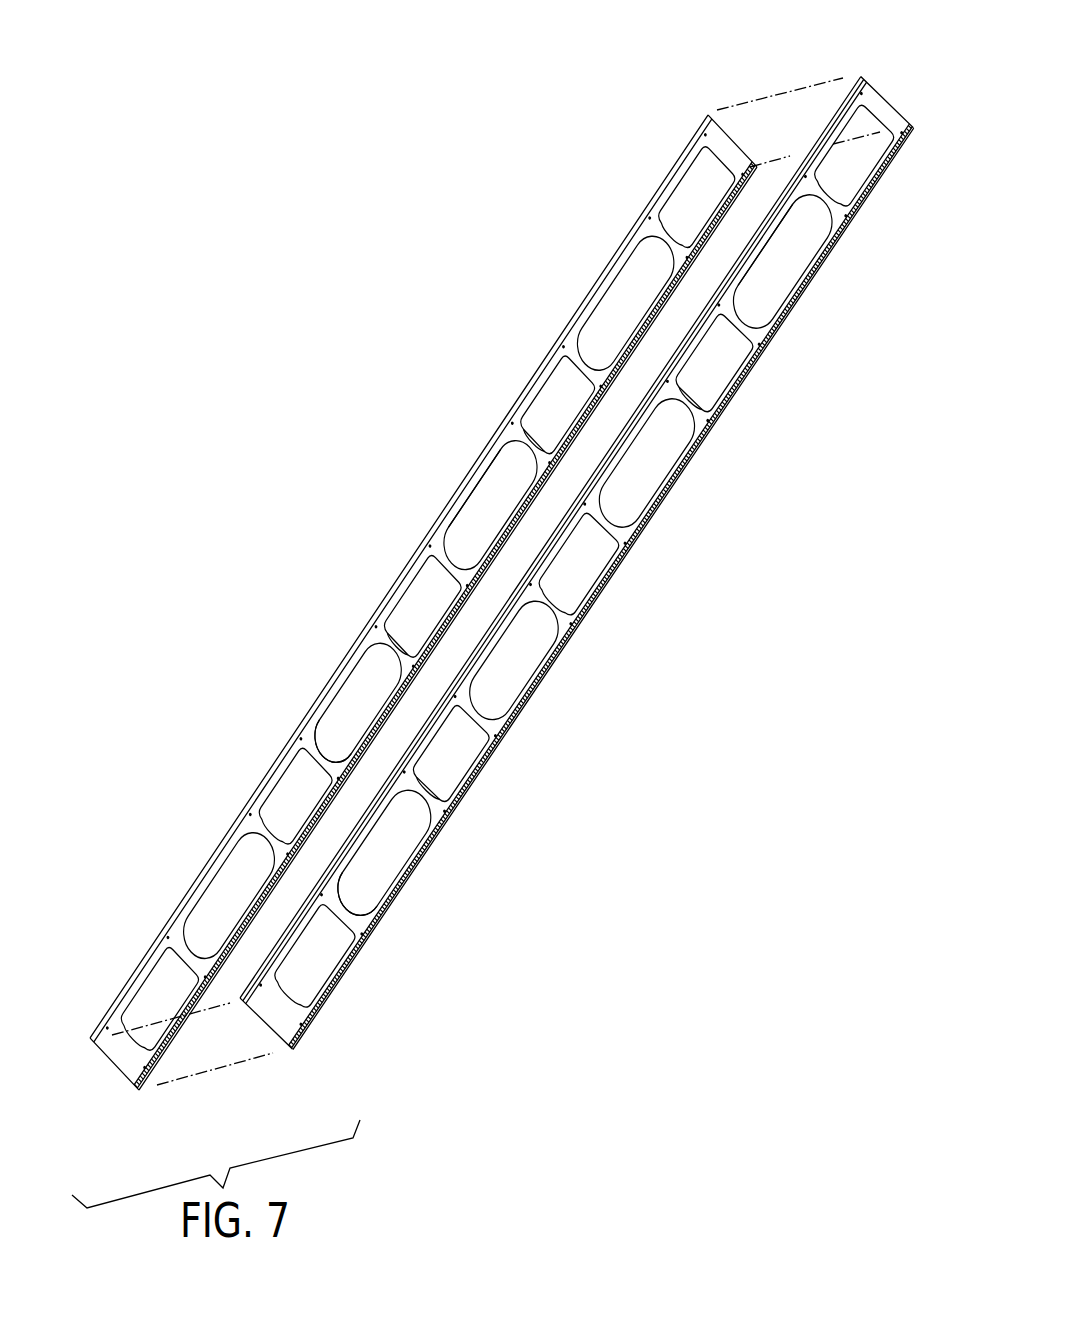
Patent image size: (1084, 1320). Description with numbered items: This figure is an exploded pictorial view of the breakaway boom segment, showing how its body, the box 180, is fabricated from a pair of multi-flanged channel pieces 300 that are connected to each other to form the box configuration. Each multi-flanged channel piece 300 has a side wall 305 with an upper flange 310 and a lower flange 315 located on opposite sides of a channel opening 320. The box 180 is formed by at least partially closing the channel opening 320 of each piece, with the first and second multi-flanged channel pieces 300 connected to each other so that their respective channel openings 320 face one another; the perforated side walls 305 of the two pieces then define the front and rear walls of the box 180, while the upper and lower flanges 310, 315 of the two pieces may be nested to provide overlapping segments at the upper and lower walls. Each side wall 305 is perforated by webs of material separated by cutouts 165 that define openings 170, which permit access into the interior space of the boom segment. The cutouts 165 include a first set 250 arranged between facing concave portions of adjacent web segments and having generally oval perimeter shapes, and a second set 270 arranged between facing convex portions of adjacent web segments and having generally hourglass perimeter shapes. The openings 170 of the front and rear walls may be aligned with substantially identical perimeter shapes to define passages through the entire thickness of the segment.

The box 180 is at (803, 72).
The multi-flanged channel piece 300 is at (733, 130).
The side wall 305 is at (320, 770).
The upper flange 310 is at (260, 998).
The lower flange 315 is at (160, 1068).
The channel opening 320 is at (742, 148).
The first set of cutouts 250 is at (380, 675).
The second set of cutouts 270 is at (437, 590).
The opening 170 is at (395, 612).
The cutout 165 is at (578, 437).